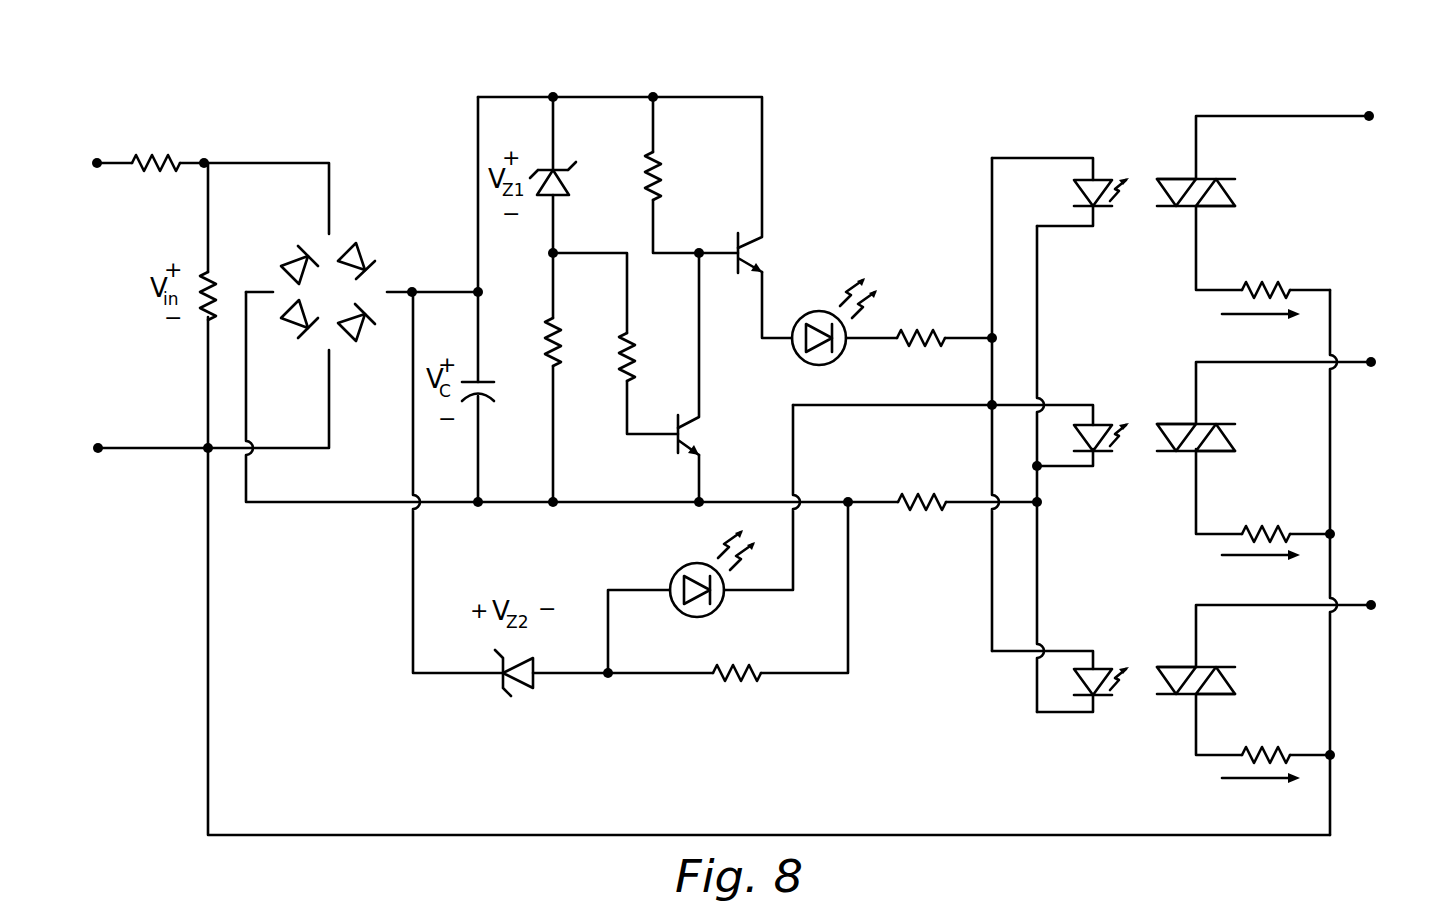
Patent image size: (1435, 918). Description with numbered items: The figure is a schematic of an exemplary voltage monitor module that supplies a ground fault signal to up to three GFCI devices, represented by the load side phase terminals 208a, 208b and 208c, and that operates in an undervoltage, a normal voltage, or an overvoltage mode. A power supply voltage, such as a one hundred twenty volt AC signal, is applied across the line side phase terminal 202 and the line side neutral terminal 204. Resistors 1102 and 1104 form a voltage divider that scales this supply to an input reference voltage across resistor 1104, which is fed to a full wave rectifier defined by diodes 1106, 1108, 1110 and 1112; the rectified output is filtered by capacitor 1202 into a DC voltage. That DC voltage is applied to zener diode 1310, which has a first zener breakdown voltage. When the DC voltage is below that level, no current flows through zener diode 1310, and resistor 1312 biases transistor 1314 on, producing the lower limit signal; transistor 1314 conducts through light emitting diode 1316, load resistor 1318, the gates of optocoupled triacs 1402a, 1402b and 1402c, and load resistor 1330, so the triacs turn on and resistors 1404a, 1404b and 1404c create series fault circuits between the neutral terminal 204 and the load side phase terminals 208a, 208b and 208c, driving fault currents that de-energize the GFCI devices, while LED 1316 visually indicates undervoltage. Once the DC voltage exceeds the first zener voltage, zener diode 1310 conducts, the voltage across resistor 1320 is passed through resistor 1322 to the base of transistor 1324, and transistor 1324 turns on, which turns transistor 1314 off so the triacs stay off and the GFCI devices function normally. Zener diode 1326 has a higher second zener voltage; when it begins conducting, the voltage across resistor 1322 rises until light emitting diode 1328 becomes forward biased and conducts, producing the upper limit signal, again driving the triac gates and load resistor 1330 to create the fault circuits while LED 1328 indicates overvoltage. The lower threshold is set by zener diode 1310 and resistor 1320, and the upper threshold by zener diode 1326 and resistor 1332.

The line side phase terminal 202 is at (97, 158).
The line side neutral terminal 204 is at (99, 445).
The resistor 1102 is at (156, 157).
The resistor 1104 is at (203, 272).
The diode 1106 is at (300, 250).
The diode 1108 is at (368, 250).
The diode 1110 is at (300, 340).
The diode 1112 is at (372, 345).
The capacitor 1202 is at (488, 398).
The zener diode 1310 is at (568, 196).
The resistor 1312 is at (663, 185).
The transistor 1314 is at (755, 243).
The light emitting diode 1316 is at (816, 366).
The load resistor 1318 is at (920, 330).
The resistor 1320 is at (558, 350).
The resistor 1322 is at (622, 340).
The transistor 1324 is at (695, 430).
The zener diode 1326 is at (533, 682).
The light emitting diode 1328 is at (673, 572).
The load resistor 1330 is at (922, 492).
The resistor 1332 is at (745, 687).
The optocoupled triac 1402a is at (1117, 165).
The optocoupled triac 1402b is at (1118, 410).
The optocoupled triac 1402c is at (1118, 653).
The resistor 1404a is at (1277, 288).
The resistor 1404b is at (1266, 532).
The resistor 1404c is at (1270, 752).
The load side phase terminal 208a is at (1369, 113).
The load side phase terminal 208b is at (1371, 358).
The load side phase terminal 208c is at (1371, 601).